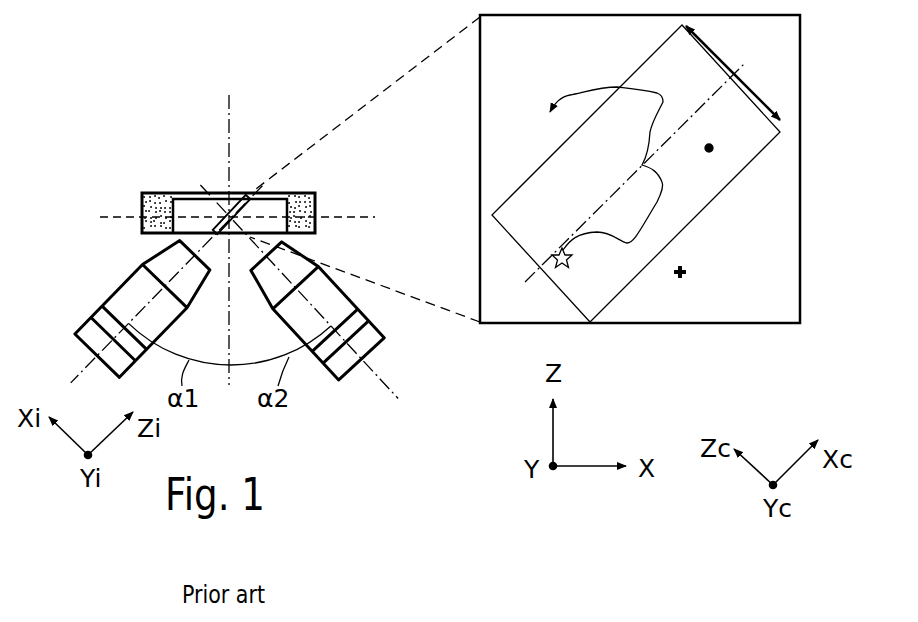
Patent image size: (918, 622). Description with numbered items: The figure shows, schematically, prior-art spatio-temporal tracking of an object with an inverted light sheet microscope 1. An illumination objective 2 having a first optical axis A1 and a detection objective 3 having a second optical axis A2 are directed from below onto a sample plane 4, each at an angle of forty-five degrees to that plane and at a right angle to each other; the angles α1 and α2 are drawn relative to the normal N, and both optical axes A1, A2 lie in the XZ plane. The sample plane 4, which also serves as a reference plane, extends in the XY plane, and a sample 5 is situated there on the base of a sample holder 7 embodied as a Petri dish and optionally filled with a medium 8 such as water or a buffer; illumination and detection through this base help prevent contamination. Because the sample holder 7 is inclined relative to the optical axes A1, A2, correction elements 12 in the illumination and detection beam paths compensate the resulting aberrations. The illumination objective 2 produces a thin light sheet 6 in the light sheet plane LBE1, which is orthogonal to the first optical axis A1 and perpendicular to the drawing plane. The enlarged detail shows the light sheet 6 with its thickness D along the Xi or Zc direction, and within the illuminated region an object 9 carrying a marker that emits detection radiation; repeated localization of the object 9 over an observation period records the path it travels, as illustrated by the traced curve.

The light sheet microscope 1 is at (171, 62).
The illumination objective 2 is at (135, 278).
The detection objective 3 is at (335, 366).
The sample plane 4 is at (362, 216).
The sample 5 is at (268, 208).
The light sheet 6 is at (227, 200).
The sample holder 7 is at (142, 216).
The medium 8 is at (150, 196).
The object 9 is at (559, 268).
The nozzle head end (2KE, 3KE) 12 is at (103, 313).
The thickness D is at (704, 38).
The first optical axis A1 is at (72, 385).
The second optical axis A2 is at (400, 400).
The normal N is at (230, 122).
The light sheet plane LBE1 is at (715, 273).